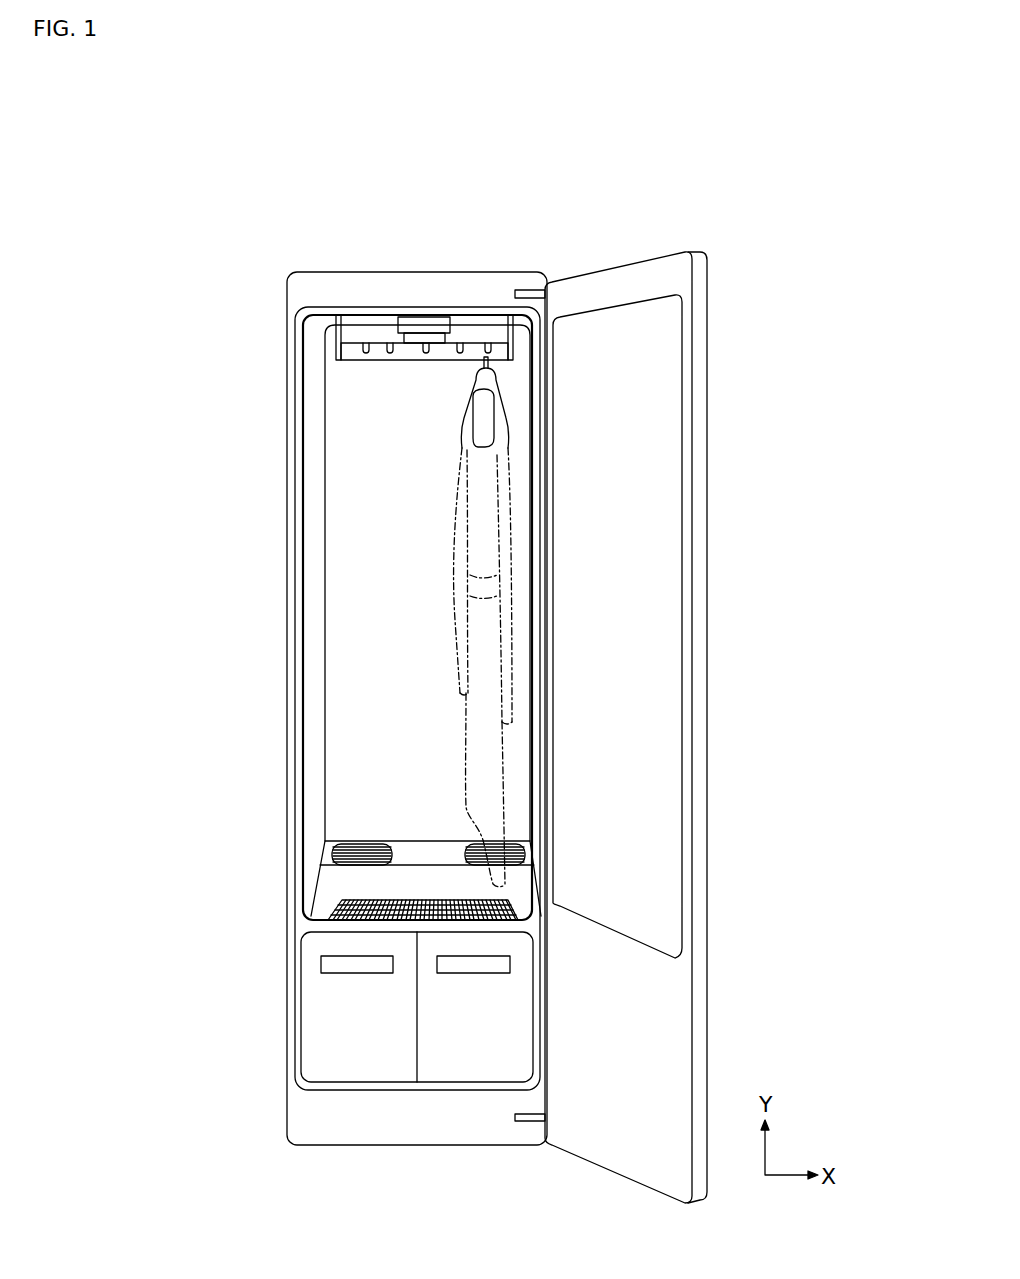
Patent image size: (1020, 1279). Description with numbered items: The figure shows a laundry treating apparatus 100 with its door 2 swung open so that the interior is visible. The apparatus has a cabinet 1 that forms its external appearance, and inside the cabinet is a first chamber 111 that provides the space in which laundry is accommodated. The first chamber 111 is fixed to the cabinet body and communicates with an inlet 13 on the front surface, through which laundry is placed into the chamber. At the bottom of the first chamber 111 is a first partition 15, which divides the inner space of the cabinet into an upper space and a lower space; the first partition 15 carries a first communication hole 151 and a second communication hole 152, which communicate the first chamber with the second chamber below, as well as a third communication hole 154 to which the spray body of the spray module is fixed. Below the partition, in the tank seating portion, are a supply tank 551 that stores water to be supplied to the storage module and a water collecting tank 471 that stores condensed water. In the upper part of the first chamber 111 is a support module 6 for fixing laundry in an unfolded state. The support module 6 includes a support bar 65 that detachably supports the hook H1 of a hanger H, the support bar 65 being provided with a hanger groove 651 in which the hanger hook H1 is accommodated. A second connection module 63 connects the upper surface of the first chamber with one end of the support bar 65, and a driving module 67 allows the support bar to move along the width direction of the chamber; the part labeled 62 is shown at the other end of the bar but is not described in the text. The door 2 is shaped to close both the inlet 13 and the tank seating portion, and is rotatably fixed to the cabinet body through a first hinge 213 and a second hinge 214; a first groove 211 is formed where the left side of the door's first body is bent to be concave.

The laundry treating apparatus 100 is at (242, 188).
The cabinet 1 is at (285, 520).
The inlet 13 is at (300, 710).
The first chamber 111 is at (355, 598).
The first partition 15 is at (345, 878).
The third communication hole 154 is at (362, 852).
The second communication hole 152 is at (515, 853).
The first communication hole 151 is at (345, 915).
The supply tank 551 is at (306, 1003).
The water collecting tank 471 is at (500, 1008).
The support module 6 is at (452, 323).
The hanger rail 62 is at (335, 338).
The support bar 65 is at (348, 358).
The second connection module 63 is at (515, 331).
The driving module 67 is at (416, 322).
The hanger groove 651 is at (368, 350).
The hanger H is at (505, 428).
The hook H1 is at (490, 355).
The door 2 is at (633, 286).
The first groove 211 is at (697, 505).
The first hinge 213 is at (537, 290).
The second hinge 214 is at (535, 1122).